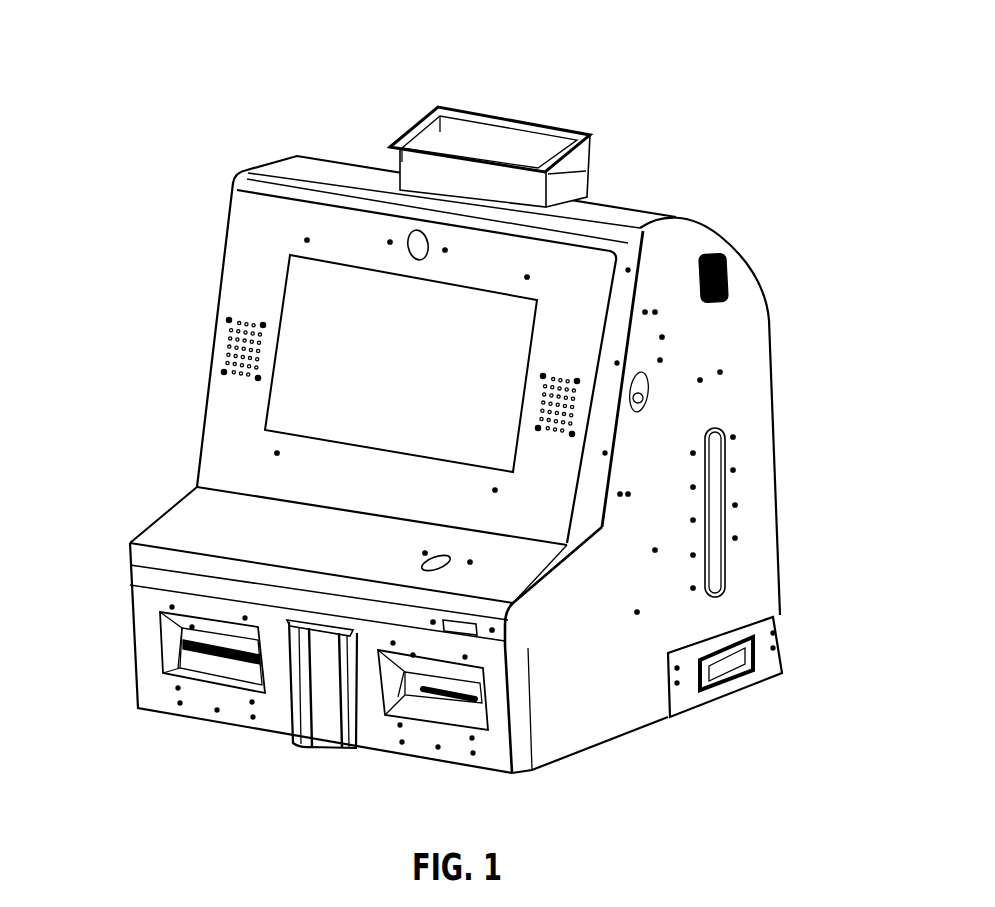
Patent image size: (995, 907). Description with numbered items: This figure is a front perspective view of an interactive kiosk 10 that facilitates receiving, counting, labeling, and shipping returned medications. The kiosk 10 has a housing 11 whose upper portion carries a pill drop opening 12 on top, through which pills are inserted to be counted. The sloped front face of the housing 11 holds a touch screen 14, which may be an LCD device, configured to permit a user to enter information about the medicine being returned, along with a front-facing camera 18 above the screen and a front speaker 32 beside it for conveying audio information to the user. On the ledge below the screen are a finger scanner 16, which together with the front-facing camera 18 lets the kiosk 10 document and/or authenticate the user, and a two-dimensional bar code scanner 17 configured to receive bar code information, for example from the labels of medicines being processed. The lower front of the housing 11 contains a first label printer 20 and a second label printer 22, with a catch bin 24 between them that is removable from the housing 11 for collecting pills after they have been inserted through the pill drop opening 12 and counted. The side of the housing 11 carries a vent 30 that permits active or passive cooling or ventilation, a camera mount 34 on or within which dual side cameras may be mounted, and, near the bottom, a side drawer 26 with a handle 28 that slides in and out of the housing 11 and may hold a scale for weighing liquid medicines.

The kiosk 10 is at (150, 60).
The housing 11 is at (748, 343).
The pill drop opening 12 is at (535, 138).
The touch screen 14 is at (308, 320).
The finger scanner 16 is at (450, 563).
The two-dimensional bar code scanner 17 is at (482, 627).
The front-facing camera 18 is at (412, 243).
The first label printer 20 is at (180, 663).
The second label printer 22 is at (442, 712).
The catch bin 24 is at (327, 727).
The side drawer 26 is at (762, 652).
The handle 28 is at (723, 665).
The vent 30 is at (713, 262).
The front speaker 32 is at (240, 345).
The camera mount 34 is at (713, 498).